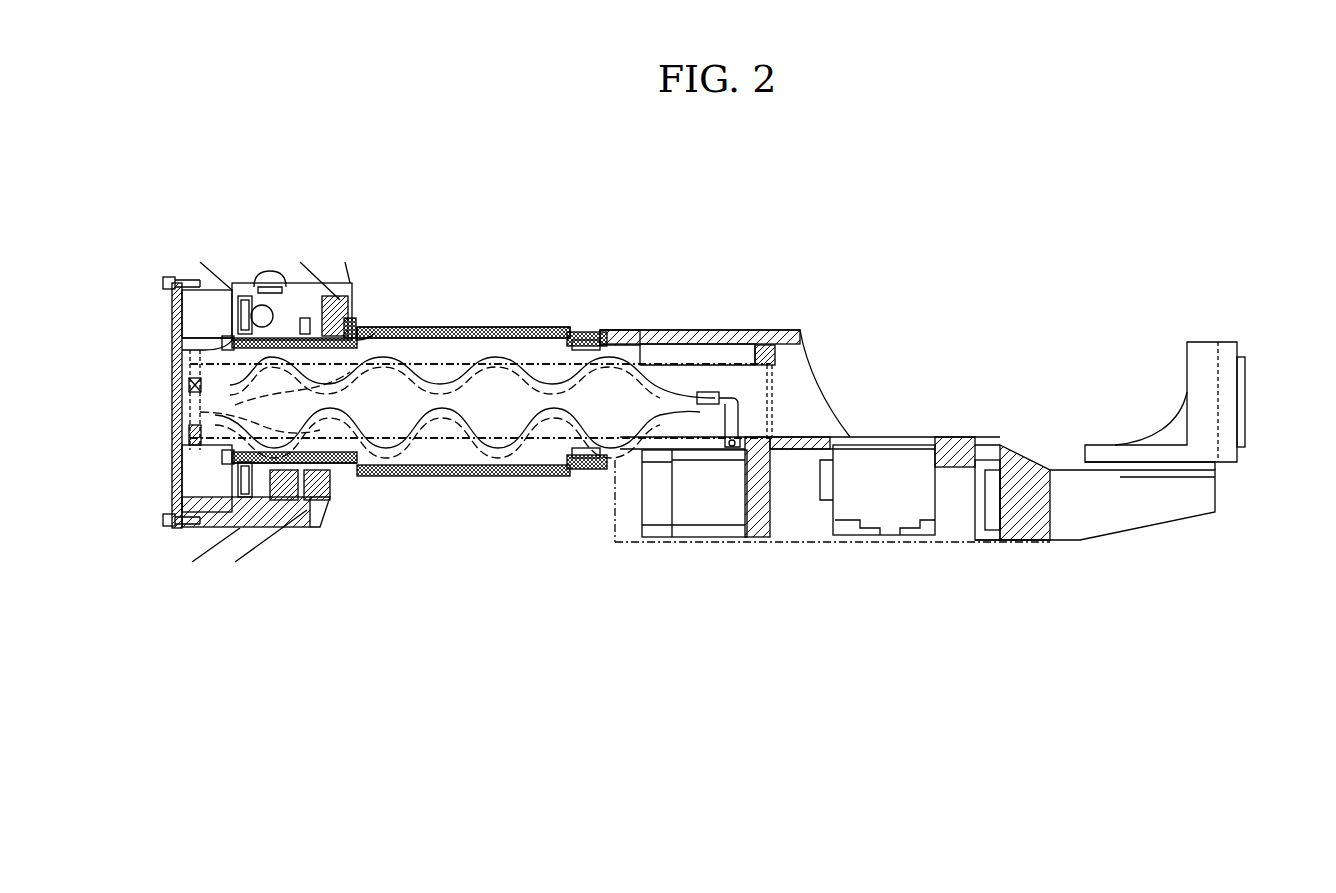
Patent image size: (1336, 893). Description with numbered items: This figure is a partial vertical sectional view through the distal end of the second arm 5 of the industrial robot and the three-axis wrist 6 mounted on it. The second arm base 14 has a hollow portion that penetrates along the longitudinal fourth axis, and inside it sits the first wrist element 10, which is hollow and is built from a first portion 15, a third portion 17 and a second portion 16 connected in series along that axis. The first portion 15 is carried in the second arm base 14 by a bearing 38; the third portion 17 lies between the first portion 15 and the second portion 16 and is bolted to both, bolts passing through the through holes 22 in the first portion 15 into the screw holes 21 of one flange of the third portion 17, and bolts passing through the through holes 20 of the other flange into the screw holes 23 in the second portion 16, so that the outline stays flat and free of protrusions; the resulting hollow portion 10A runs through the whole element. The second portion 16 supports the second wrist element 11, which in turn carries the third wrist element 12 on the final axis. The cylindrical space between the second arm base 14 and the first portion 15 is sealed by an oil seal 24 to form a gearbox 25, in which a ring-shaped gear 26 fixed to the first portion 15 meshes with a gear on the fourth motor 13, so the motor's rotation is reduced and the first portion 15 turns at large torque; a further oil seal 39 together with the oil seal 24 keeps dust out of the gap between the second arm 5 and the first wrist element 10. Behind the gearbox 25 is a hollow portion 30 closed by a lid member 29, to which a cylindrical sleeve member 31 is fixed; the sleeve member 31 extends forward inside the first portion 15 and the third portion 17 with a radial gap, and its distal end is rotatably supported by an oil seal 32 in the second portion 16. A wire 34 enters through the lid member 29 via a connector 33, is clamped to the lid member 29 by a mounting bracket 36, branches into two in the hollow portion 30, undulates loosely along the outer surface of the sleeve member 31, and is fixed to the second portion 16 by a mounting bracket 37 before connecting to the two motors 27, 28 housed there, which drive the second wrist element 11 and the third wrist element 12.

The second arm 5 is at (185, 532).
The wrist 6 is at (1203, 540).
The first wrist element 10 is at (532, 327).
The hollow portion 10A is at (508, 455).
The second wrist element 11 is at (1118, 445).
The third wrist element 12 is at (1246, 400).
The fourth motor 13 is at (295, 282).
The second arm base 14 is at (232, 512).
The first portion 15 is at (340, 296).
The second portion 16 is at (708, 331).
The third portion 17 is at (452, 327).
The through holes 20 is at (568, 332).
The screw holes 21 is at (380, 335).
The through holes 22 is at (300, 432).
The screw holes 23 is at (640, 332).
The oil seal 24 is at (350, 320).
The gearbox 25 is at (270, 495).
The ring-shaped gear 26 is at (300, 515).
The motor 27 is at (705, 520).
The motor 28 is at (900, 500).
The lid member 29 is at (176, 490).
The hollow portion 30 is at (195, 308).
The sleeve member 31 is at (205, 352).
The oil seal 32 is at (772, 350).
The connector 33 is at (200, 385).
The wire 34 is at (497, 340).
The mounting bracket 36 is at (222, 515).
The mounting bracket 37 is at (745, 405).
The bearing 38 is at (338, 510).
The oil seal 39 is at (232, 283).